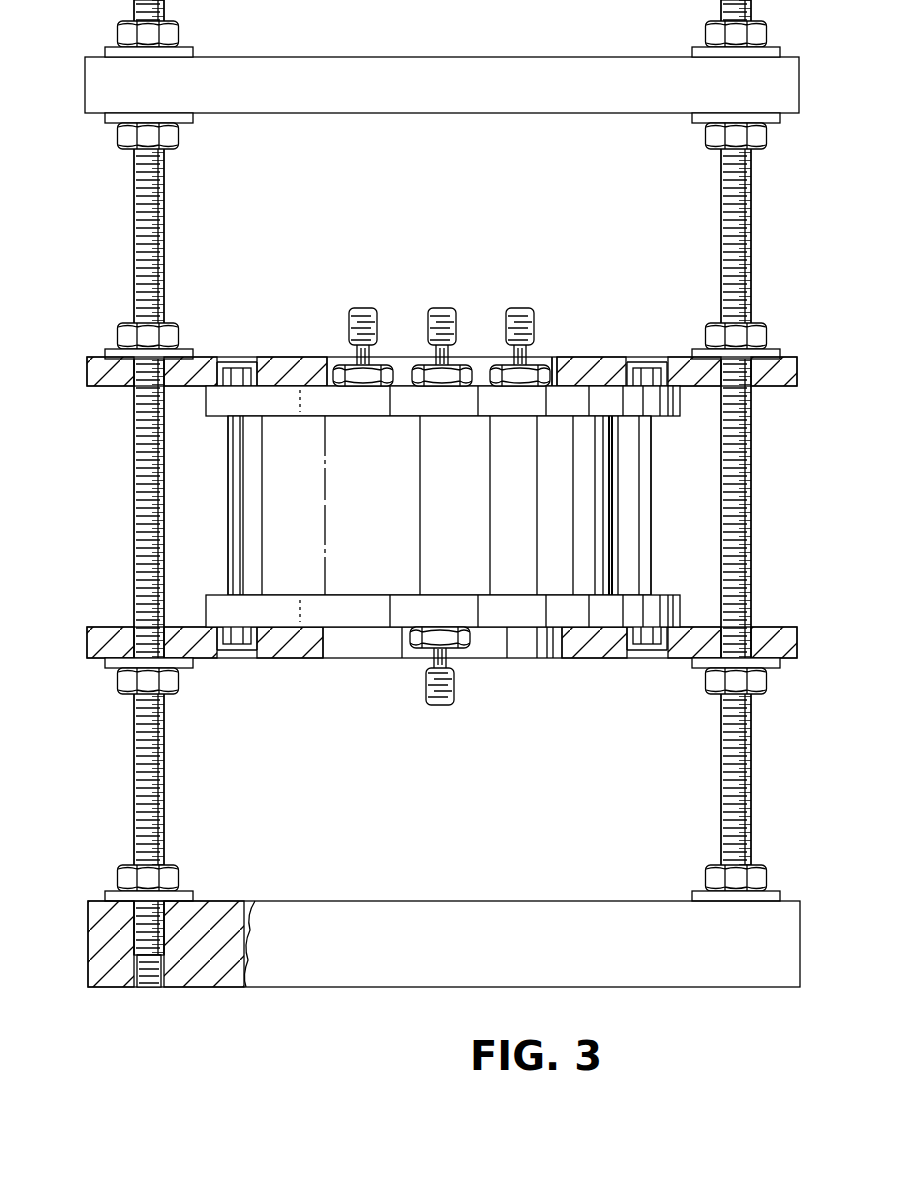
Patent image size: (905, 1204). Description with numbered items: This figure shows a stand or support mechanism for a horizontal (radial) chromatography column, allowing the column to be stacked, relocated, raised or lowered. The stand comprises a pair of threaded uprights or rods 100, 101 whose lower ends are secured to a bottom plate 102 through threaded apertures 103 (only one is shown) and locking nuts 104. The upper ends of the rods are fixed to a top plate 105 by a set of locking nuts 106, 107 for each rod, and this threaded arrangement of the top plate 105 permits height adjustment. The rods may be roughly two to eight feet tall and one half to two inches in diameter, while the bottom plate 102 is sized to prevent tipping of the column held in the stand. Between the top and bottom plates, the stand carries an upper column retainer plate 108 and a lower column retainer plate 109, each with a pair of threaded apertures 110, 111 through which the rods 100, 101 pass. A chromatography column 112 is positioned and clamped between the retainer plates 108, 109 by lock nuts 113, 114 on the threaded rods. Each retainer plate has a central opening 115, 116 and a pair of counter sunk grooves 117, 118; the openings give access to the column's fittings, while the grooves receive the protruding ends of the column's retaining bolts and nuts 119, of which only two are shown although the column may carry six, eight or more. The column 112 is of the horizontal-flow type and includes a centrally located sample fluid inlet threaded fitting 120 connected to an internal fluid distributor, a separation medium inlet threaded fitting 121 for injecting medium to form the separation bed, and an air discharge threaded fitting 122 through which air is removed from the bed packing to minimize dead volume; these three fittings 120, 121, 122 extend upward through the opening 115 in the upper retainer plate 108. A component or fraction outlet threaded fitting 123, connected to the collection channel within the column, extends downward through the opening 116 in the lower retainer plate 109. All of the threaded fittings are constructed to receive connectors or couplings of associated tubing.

The threaded upright or rod 100 is at (140, 468).
The threaded upright or rod 101 is at (752, 518).
The bottom plate 102 is at (472, 955).
The threaded aperture 103 is at (153, 985).
The locking nut 104 is at (178, 878).
The top plate 105 is at (467, 102).
The locking nut 106 is at (178, 32).
The locking nut 107 is at (706, 32).
The upper column retainer plate 108 is at (554, 357).
The lower column retainer plate 109 is at (595, 650).
The threaded aperture 110 is at (140, 400).
The threaded aperture 111 is at (140, 632).
The chromatography column 112 is at (392, 557).
The lock nut 113 is at (178, 333).
The lock nut 114 is at (178, 682).
The central opening 115 is at (398, 378).
The central opening 116 is at (372, 646).
The counter sunk groove 117 is at (237, 362).
The counter sunk groove 118 is at (240, 650).
The retainer bolts and nuts 119 is at (228, 500).
The sample fluid inlet threaded fitting 120 is at (442, 306).
The separation medium inlet threaded fitting 121 is at (520, 308).
The air discharge threaded fitting 122 is at (349, 316).
The fraction outlet threaded fitting 123 is at (446, 705).